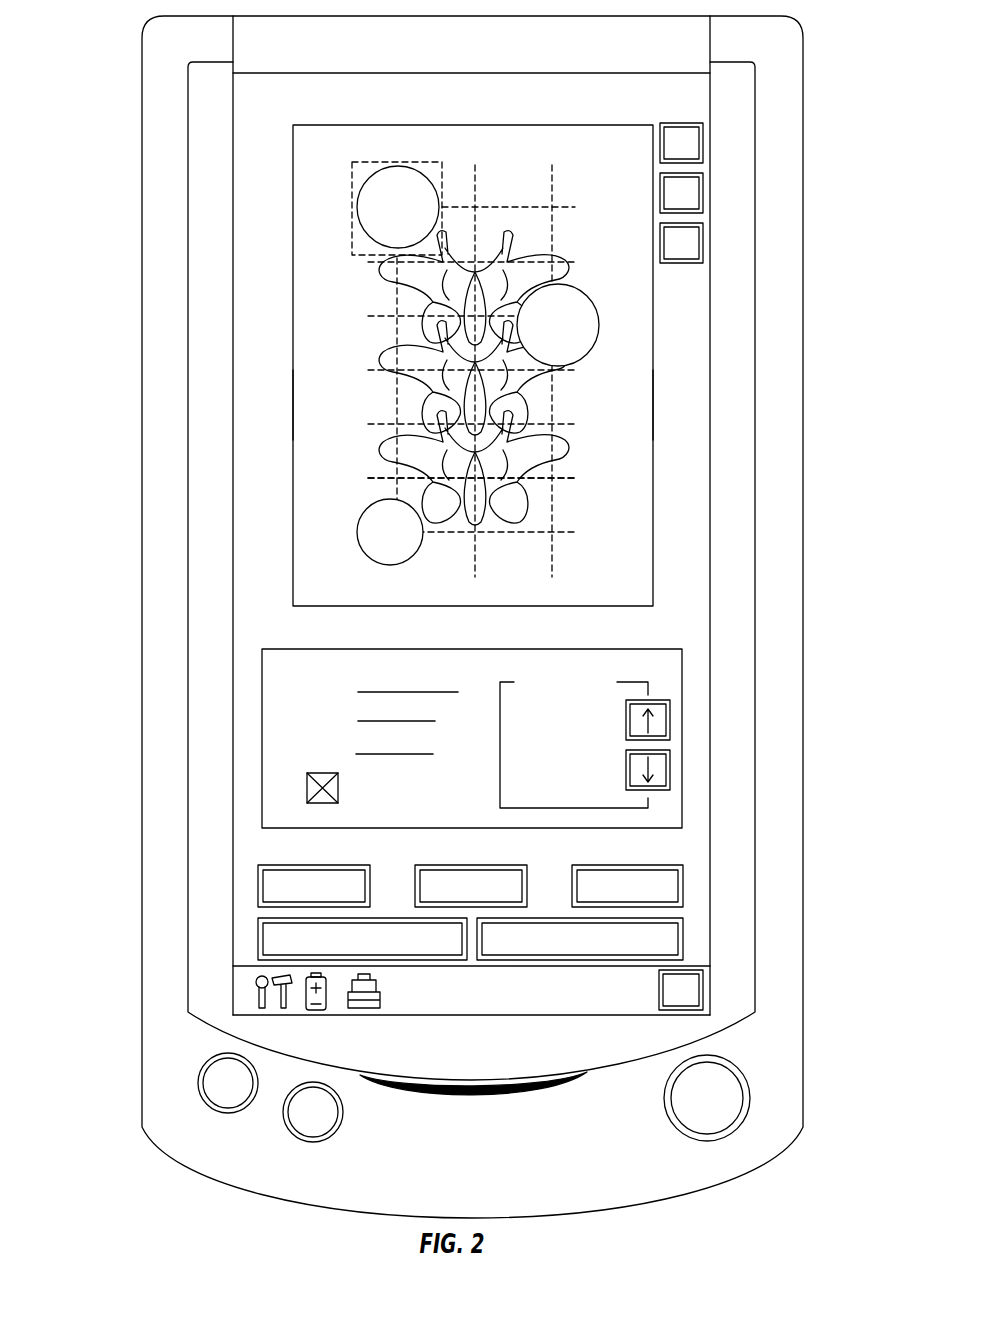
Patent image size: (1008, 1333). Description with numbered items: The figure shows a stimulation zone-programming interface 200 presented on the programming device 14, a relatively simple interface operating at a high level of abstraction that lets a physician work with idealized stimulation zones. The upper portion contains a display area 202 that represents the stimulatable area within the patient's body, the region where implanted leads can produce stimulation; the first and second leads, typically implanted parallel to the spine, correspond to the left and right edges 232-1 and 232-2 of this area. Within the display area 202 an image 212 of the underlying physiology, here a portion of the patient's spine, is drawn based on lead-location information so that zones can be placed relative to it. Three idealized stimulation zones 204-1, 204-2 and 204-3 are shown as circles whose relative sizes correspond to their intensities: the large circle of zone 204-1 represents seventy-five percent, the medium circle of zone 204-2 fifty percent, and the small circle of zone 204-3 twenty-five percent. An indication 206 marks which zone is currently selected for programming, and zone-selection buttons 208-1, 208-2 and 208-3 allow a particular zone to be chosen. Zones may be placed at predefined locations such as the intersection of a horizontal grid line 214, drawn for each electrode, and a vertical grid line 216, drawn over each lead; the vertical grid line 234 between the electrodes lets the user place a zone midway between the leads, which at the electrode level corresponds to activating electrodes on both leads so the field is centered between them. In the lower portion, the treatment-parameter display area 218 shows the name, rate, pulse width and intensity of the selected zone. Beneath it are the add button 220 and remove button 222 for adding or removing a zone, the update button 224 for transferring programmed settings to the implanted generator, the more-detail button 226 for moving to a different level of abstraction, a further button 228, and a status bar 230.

The programming device 14 is at (137, 30).
The stimulation zone-programming interface 200 is at (215, 290).
The display area 202 is at (603, 560).
The idealized stimulation zone 204-1 is at (357, 207).
The idealized stimulation zone 204-2 is at (560, 284).
The idealized stimulation zone 204-3 is at (385, 566).
The indication 206 is at (442, 180).
The zone-selection button 208-1 is at (695, 145).
The zone-selection button 208-2 is at (695, 195).
The zone-selection button 208-3 is at (695, 245).
The image of underlying physiology 212 is at (525, 440).
The horizontal grid line 214 is at (560, 477).
The vertical grid line 216 is at (558, 512).
The treatment-parameter display area 218 is at (658, 673).
The add button 220 is at (315, 872).
The remove button 222 is at (465, 872).
The update button 224 is at (620, 872).
The more-detail button 226 is at (277, 938).
The button 228 is at (663, 938).
The status bar 230 is at (505, 1000).
The left edge of displayed stimulatable area 232-1 is at (293, 405).
The right edge of displayed stimulatable area 232-2 is at (653, 405).
The vertical grid line between the electrodes 234 is at (475, 567).